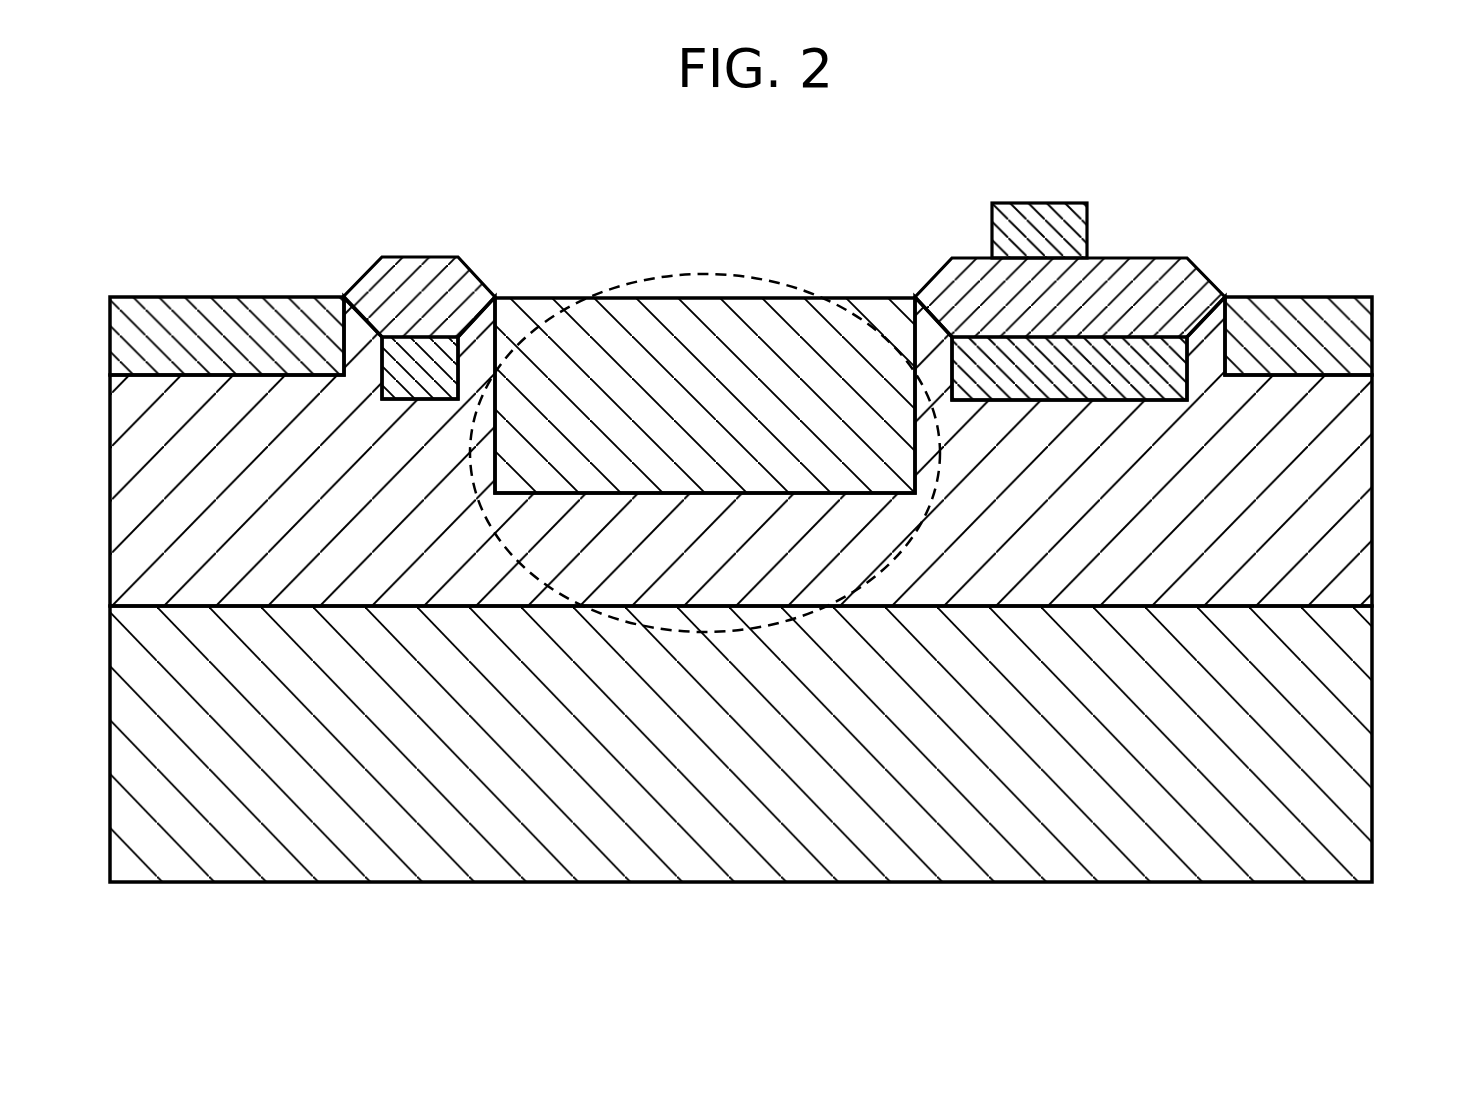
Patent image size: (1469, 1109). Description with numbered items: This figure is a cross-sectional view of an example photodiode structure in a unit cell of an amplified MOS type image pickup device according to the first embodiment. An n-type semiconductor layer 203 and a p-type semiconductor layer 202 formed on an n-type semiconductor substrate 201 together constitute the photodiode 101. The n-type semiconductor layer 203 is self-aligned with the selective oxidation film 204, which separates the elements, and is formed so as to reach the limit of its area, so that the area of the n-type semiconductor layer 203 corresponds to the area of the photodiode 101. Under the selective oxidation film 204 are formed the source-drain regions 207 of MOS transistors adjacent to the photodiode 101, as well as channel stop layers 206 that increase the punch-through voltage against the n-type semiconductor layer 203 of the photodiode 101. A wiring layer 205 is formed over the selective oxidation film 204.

The photodiode 101 is at (630, 283).
The n-type semiconductor substrate 201 is at (1293, 737).
The p-type semiconductor layer 202 is at (1293, 498).
The n-type semiconductor layer 203 is at (712, 347).
The selective oxidation film 204 is at (415, 290).
The wiring layer 205 is at (1033, 220).
The channel stop layer 206 is at (418, 368).
The source-drain region 207 is at (227, 330).